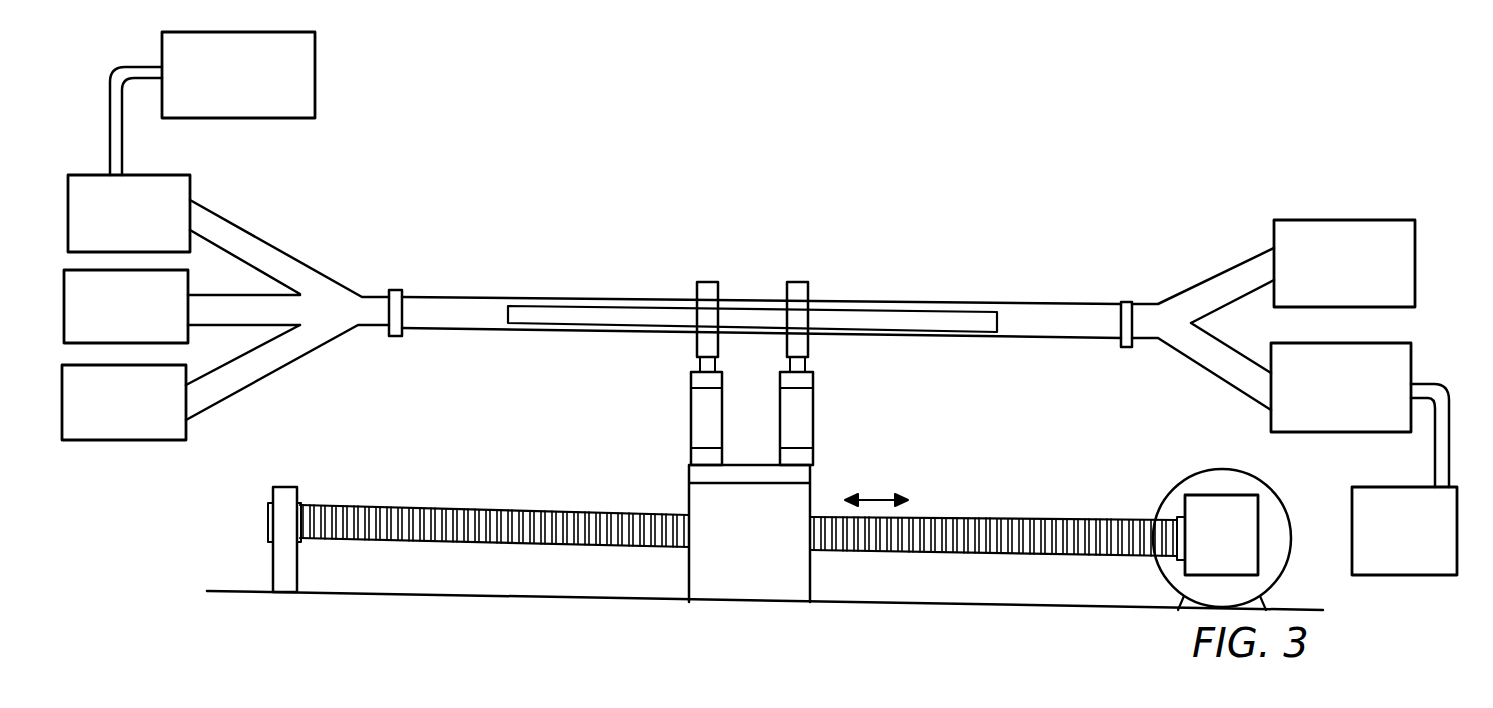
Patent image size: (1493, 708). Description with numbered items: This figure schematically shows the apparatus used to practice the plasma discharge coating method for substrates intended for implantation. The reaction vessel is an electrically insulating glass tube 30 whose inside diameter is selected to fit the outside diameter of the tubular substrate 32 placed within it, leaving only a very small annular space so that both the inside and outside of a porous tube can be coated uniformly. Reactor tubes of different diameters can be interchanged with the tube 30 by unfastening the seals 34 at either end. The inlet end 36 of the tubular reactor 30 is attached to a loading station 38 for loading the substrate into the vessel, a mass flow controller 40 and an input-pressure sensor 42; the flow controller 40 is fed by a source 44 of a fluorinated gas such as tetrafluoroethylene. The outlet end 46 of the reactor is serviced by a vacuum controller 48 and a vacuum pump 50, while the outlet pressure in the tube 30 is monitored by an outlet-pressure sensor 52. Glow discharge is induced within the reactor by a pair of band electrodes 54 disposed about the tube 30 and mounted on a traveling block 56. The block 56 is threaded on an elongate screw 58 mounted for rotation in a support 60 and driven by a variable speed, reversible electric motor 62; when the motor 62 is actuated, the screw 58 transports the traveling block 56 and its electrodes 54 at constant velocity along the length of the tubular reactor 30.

The glass tube 30 is at (472, 297).
The tubular substrate 32 is at (573, 306).
The seals 34 is at (397, 290).
The inlet end 36 is at (350, 286).
The loading station 38 is at (126, 306).
The mass flow controller 40 is at (129, 213).
The input-pressure sensor 42 is at (124, 402).
The source of fluorinated gas 44 is at (212, 103).
The outlet end 46 is at (1147, 306).
The vacuum controller 48 is at (1341, 387).
The vacuum pump 50 is at (1404, 479).
The outlet-pressure sensor 52 is at (1344, 263).
The band electrodes 54 is at (783, 290).
The traveling block 56 is at (749, 533).
The elongate screw 58 is at (505, 507).
The support 60 is at (285, 487).
The electric motor 62 is at (1222, 539).